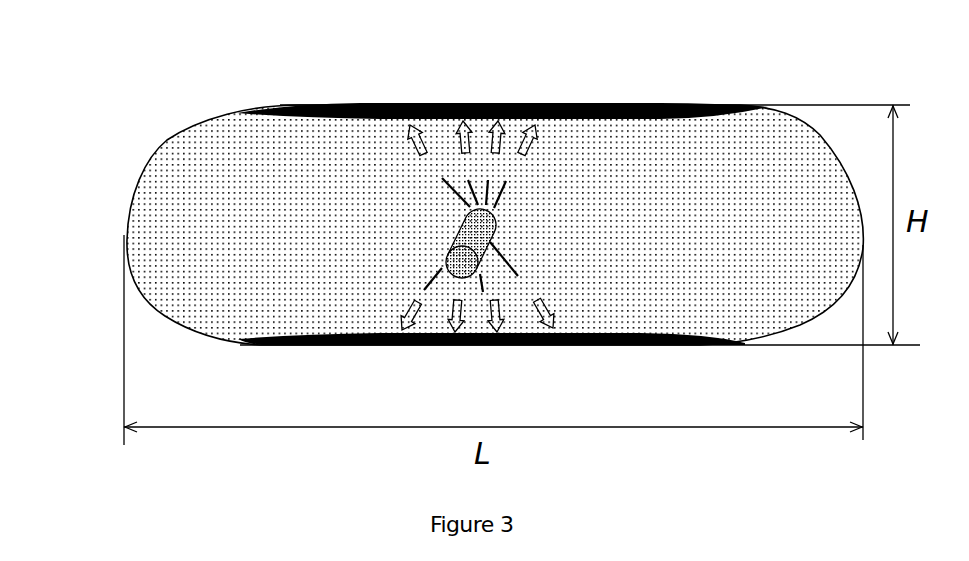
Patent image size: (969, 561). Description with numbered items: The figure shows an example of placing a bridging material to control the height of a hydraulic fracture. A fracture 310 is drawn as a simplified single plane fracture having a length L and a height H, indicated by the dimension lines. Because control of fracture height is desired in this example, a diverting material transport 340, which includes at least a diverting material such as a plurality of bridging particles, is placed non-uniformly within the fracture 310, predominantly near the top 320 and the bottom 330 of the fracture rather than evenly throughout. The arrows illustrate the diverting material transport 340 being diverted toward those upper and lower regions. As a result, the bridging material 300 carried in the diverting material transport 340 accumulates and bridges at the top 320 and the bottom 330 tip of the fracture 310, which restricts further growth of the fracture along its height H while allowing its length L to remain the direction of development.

The bridging material 300 is at (328, 326).
The fracture 310 is at (125, 220).
The top of the fracture 320 is at (727, 98).
The bottom of the fracture 330 is at (719, 351).
The diverting material transport 340 is at (355, 285).